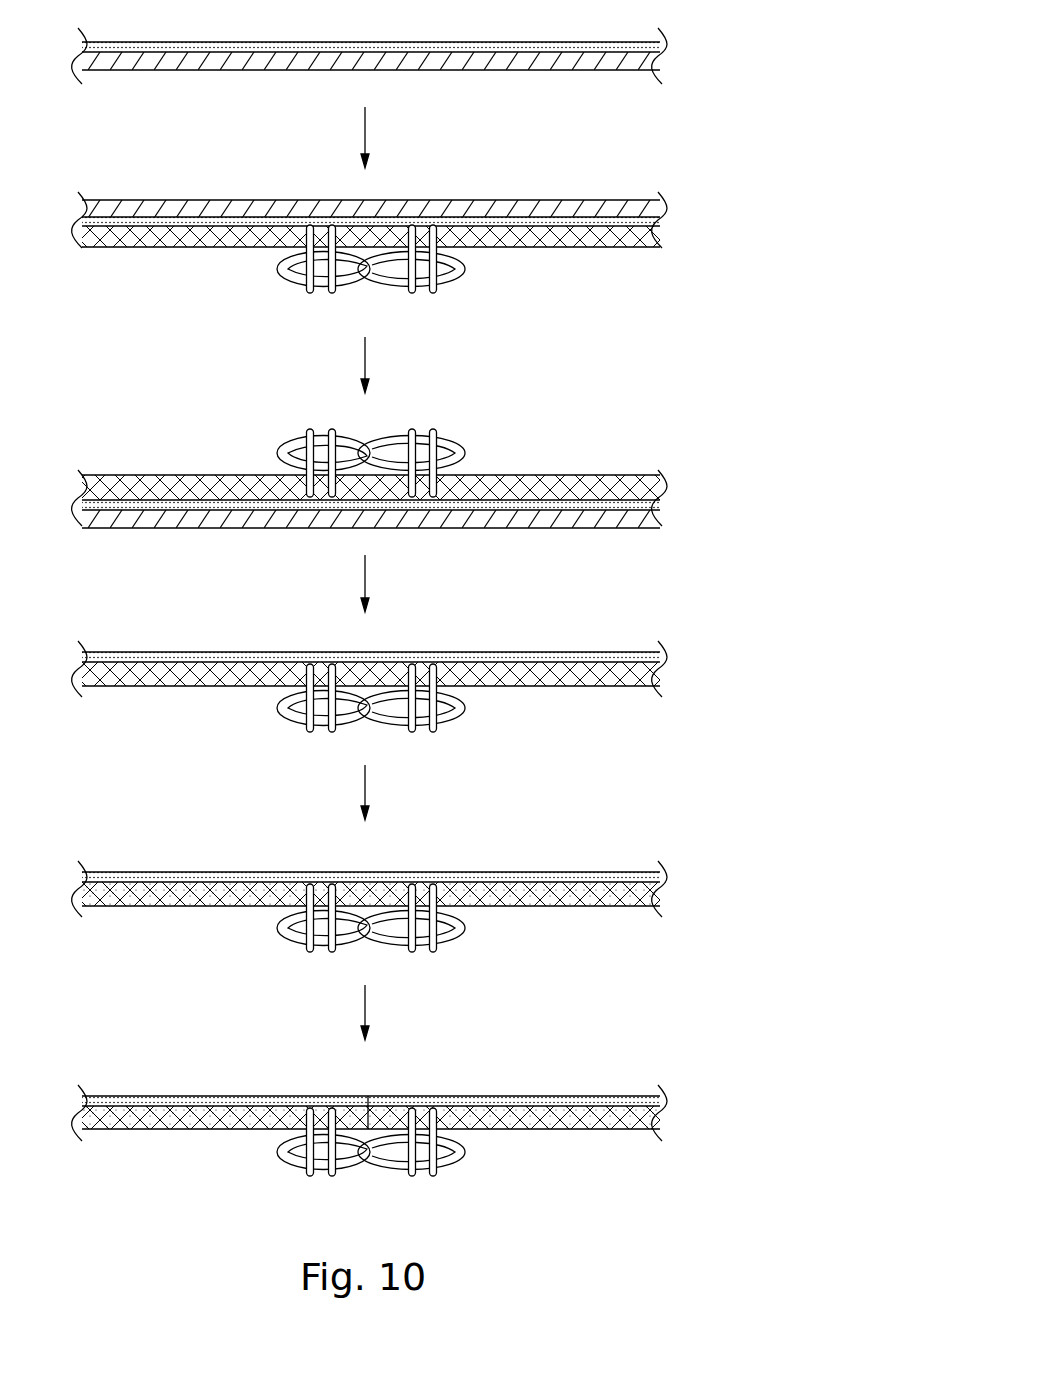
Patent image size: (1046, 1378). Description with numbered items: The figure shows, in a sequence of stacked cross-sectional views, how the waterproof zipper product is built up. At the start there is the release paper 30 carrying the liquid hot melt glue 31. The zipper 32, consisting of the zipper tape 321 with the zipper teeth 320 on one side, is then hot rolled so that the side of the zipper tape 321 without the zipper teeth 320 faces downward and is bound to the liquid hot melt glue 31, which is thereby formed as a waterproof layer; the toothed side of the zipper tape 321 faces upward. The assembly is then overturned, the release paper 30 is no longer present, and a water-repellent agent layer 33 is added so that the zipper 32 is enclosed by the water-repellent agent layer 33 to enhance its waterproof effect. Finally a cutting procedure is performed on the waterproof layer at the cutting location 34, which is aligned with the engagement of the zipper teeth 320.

The release paper 30 is at (652, 62).
The liquid hot melt glue 31 is at (661, 47).
The zipper 32 is at (350, 779).
The zipper teeth 320 is at (467, 269).
The zipper tape 321 is at (565, 243).
The water-repellent agent layer 33 is at (645, 899).
The cutting location 34 is at (373, 1090).